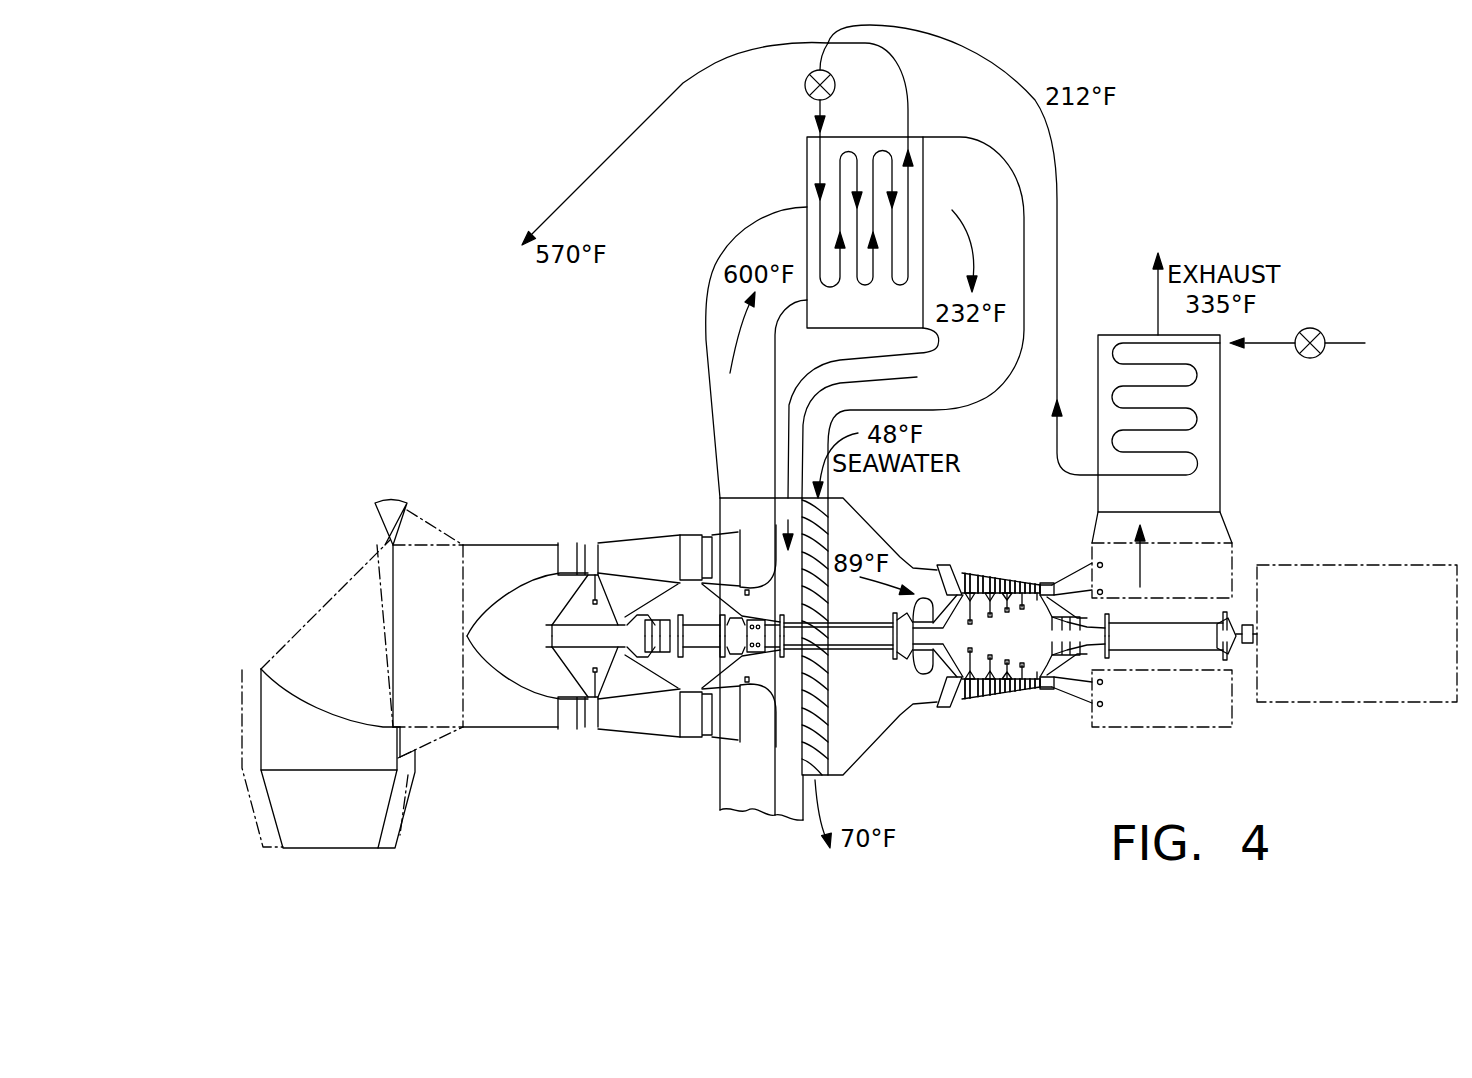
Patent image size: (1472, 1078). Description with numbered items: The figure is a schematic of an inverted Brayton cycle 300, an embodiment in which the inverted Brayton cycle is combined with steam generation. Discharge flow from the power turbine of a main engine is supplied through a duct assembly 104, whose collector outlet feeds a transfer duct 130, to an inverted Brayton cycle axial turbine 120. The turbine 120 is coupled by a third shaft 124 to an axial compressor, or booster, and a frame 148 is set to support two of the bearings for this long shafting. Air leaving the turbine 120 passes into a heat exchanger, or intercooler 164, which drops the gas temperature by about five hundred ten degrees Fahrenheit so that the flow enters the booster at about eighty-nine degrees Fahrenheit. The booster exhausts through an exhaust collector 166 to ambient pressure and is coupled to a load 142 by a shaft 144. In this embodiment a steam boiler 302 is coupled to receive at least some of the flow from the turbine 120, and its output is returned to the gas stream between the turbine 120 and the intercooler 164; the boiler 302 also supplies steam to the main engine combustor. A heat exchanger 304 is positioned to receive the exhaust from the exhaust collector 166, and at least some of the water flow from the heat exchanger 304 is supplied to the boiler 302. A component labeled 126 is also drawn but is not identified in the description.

The inverted Brayton cycle 300 is at (370, 337).
The steam boiler 302 is at (807, 168).
The heat exchanger 304 is at (1220, 404).
The duct assembly 104 is at (257, 647).
The transfer duct 130 is at (380, 790).
The axial turbine 120 is at (580, 522).
The frame 148 is at (680, 718).
The intercooler duct 126 is at (743, 492).
The heat exchanger, or intercooler 164 is at (823, 538).
The third shaft 124 is at (847, 645).
The exhaust collector 166 is at (1233, 553).
The shaft 144 is at (1228, 653).
The load 142 is at (1340, 703).